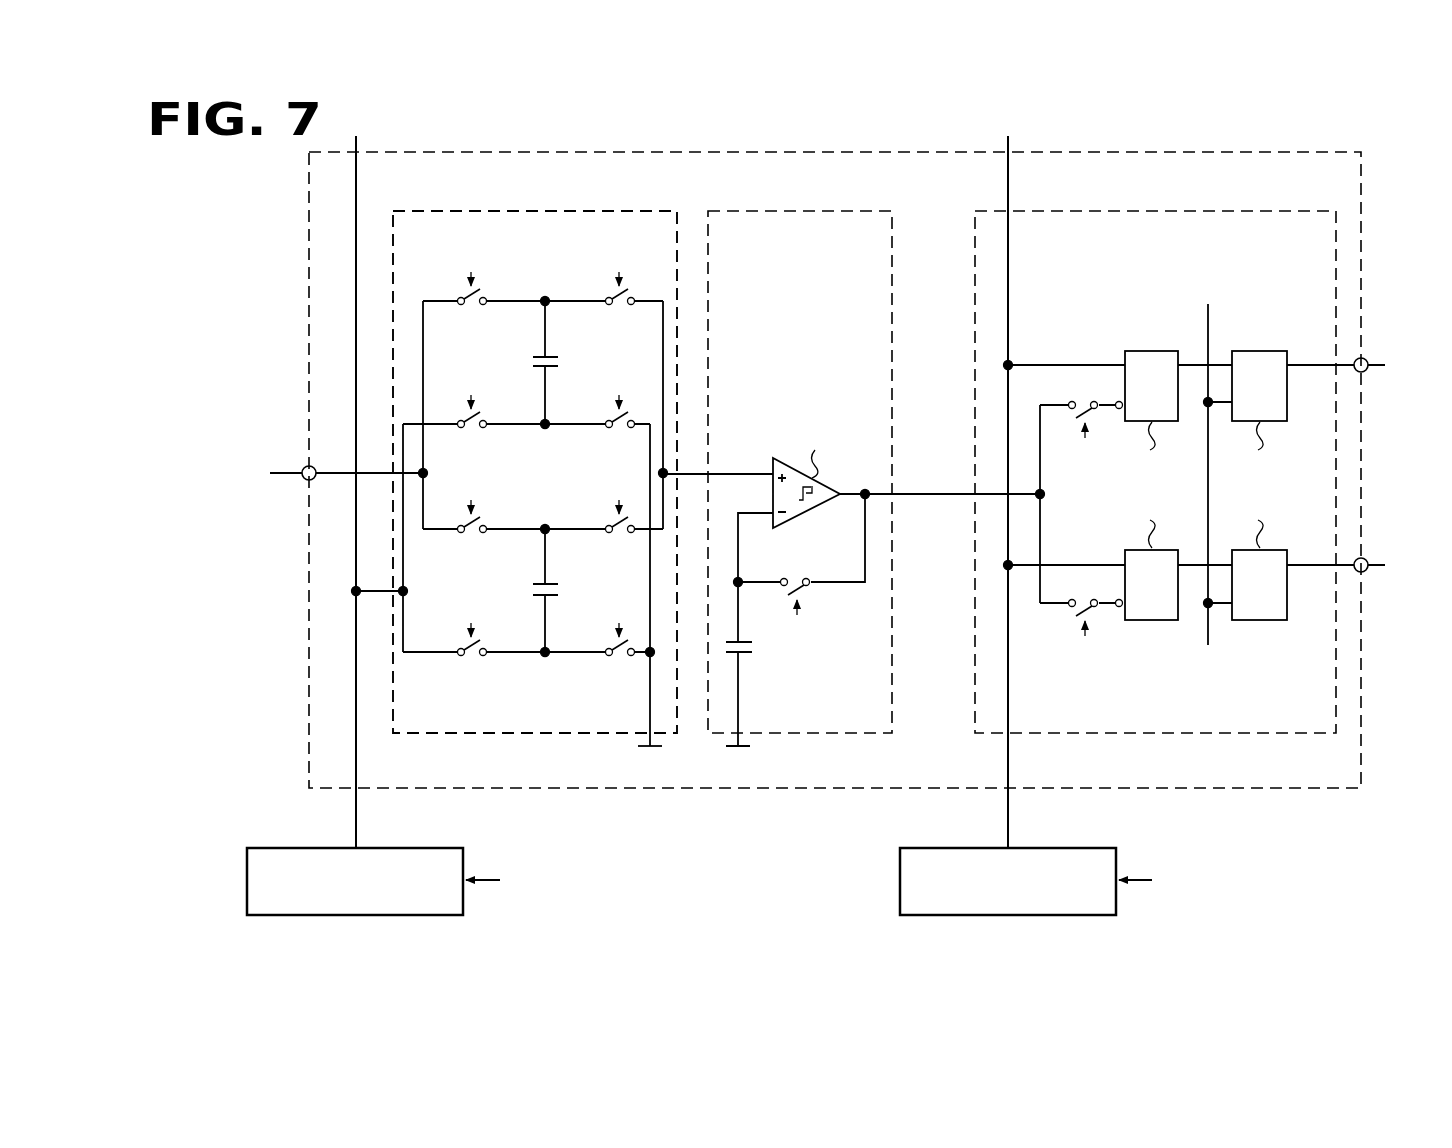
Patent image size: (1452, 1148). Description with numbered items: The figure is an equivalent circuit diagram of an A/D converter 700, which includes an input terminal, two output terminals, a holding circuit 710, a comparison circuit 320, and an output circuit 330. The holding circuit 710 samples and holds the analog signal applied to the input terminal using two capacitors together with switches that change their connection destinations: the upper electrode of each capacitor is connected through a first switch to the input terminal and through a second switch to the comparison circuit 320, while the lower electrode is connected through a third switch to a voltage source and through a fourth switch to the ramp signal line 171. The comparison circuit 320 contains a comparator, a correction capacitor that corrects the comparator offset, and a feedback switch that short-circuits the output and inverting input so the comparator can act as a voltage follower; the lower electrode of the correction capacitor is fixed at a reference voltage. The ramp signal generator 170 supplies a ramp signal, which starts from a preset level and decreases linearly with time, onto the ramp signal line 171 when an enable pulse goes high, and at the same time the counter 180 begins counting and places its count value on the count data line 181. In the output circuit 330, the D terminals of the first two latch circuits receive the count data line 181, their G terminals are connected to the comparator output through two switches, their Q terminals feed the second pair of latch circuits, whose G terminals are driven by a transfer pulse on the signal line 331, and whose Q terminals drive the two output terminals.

The A/D converter 700 is at (741, 151).
The holding circuit 710 is at (556, 211).
The comparison circuit 320 is at (852, 211).
The output circuit 330 is at (1278, 210).
The signal line 331 is at (1210, 328).
The ramp signal generator 170 is at (247, 880).
The ramp signal line 171 is at (356, 820).
The counter 180 is at (900, 880).
The count data line 181 is at (1008, 820).